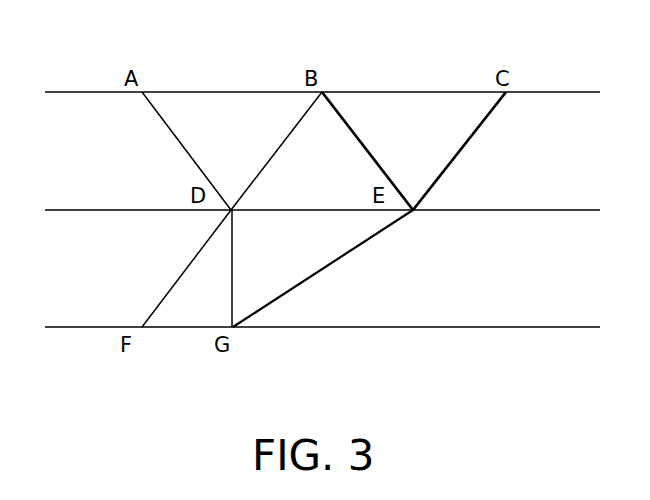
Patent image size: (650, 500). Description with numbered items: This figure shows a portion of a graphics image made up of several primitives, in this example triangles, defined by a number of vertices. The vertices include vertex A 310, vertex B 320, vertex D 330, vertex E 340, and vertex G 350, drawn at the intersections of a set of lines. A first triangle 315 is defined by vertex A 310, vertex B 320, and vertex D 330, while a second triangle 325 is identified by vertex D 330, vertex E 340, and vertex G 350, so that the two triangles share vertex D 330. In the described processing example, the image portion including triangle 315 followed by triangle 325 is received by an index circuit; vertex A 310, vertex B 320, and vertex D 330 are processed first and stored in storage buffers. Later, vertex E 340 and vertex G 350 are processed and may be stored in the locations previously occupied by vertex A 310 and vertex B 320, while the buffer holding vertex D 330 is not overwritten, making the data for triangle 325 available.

The vertex A 310 is at (142, 92).
The triangle 315 is at (270, 110).
The vertex B 320 is at (322, 92).
The triangle 325 is at (273, 276).
The vertex D 330 is at (231, 210).
The vertex E 340 is at (413, 210).
The vertex G 350 is at (233, 327).